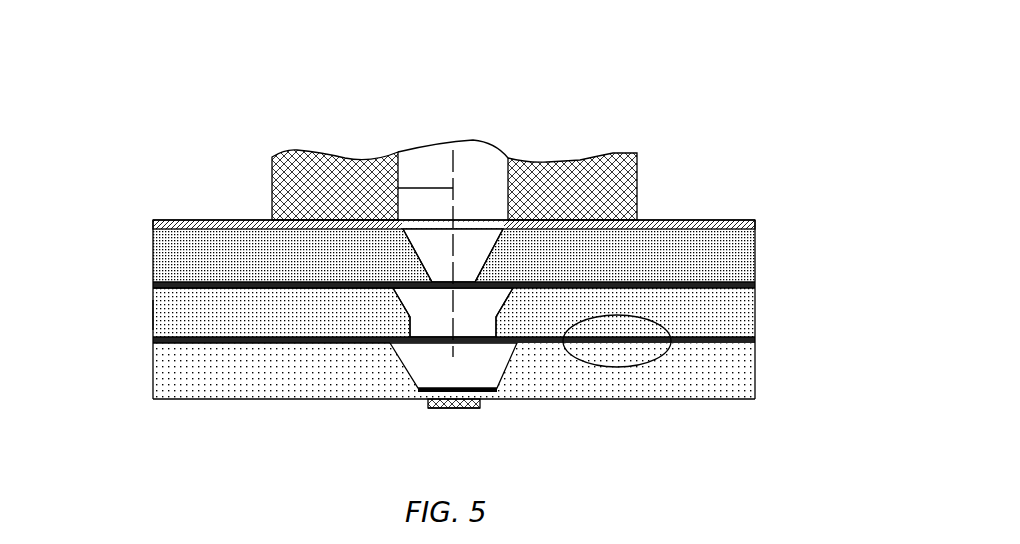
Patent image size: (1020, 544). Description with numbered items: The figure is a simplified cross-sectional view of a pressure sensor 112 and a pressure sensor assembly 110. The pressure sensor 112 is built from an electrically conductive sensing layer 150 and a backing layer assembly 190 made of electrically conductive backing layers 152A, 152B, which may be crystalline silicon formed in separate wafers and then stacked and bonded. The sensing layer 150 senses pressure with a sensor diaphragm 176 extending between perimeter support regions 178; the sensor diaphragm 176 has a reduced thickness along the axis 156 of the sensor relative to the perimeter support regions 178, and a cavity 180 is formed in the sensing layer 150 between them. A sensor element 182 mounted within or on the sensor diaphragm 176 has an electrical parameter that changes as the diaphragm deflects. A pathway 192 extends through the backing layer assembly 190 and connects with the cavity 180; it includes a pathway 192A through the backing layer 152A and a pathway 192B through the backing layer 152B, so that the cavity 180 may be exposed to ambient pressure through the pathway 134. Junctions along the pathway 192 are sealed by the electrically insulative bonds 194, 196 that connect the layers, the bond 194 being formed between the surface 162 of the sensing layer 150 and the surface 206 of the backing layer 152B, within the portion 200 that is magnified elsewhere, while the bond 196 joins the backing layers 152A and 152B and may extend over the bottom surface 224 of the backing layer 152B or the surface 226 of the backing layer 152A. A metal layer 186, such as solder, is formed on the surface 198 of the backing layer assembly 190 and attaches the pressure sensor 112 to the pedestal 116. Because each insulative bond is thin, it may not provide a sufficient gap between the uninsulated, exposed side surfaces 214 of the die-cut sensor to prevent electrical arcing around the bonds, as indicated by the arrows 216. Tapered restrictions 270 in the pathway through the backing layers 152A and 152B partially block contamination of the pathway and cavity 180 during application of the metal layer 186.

The pressure sensor assembly 110 is at (112, 80).
The pressure sensor 112 is at (764, 82).
The pedestal 116 is at (372, 165).
The pathway 134 is at (490, 157).
The sensing layer 150 is at (747, 382).
The electrically conductive backing layer 152A is at (750, 246).
The electrically conductive backing layer 152B is at (748, 311).
The axis 156 is at (397, 188).
The surface of the sensing layer 162 is at (175, 328).
The sensor diaphragm 176 is at (440, 408).
The perimeter support regions 178 is at (395, 372).
The cavity 180 is at (478, 370).
The sensor element 182 is at (452, 408).
The metal layer 186 is at (728, 220).
The backing layer assembly 190 is at (822, 241).
The pathway 192 is at (484, 214).
The pathway 192A is at (433, 247).
The pathway 192B is at (492, 293).
The electrically insulative bond 194 is at (312, 344).
The electrically insulative bond 196 is at (263, 283).
The surface of the backing layer assembly 198 is at (188, 213).
The portion 200 is at (632, 367).
The surface of the backing layer 206 is at (213, 352).
The side surfaces 214 is at (153, 243).
The arrows 216 is at (153, 268).
The bottom surface of the backing layer 224 is at (218, 274).
The surface of the backing layer 226 is at (248, 297).
The restrictions 270 is at (409, 269).